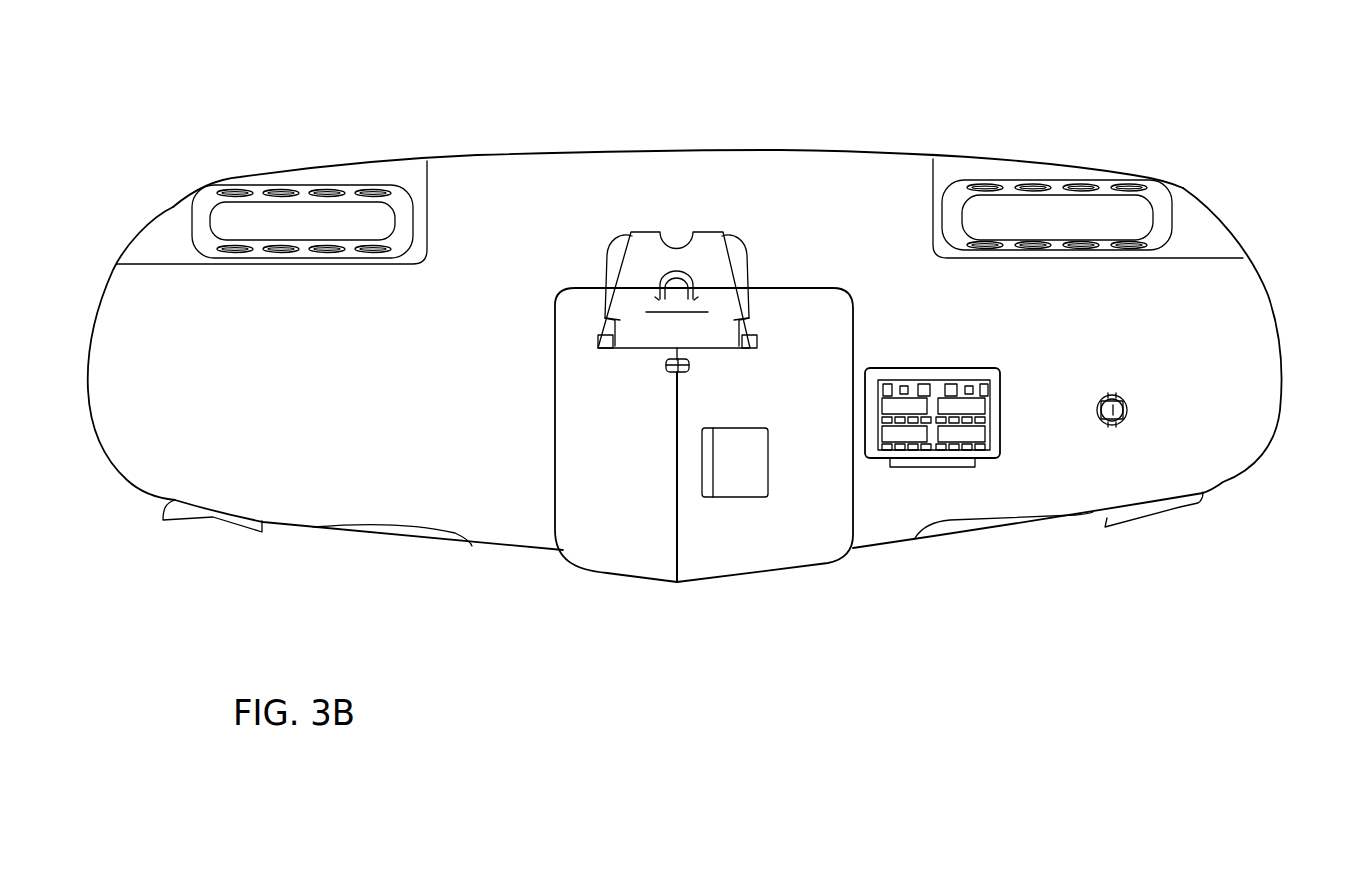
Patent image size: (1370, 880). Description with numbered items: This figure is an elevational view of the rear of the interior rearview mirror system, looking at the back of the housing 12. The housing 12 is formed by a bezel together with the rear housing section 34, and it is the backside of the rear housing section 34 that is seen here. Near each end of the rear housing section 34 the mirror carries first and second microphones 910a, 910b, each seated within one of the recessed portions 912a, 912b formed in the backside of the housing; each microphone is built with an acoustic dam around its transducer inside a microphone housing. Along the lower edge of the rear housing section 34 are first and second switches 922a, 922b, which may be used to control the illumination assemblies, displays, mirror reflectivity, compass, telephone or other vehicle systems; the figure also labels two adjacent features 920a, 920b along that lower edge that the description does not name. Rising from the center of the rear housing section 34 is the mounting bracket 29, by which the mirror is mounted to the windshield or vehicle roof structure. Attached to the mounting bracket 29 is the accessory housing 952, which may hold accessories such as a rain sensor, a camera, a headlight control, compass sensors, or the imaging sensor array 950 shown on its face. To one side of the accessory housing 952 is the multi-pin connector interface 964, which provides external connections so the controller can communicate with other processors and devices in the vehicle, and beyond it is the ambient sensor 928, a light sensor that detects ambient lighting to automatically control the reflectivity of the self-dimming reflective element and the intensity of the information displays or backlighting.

The housing 12 is at (506, 150).
The rear housing section 34 is at (630, 177).
The mounting bracket 29 is at (617, 270).
The first microphone 910a is at (1139, 182).
The second microphone 910b is at (234, 197).
The recessed portion 912a is at (1207, 233).
The recessed portion 912b is at (175, 226).
The right lower pad 920a is at (1003, 527).
The left lower pad 920b is at (428, 540).
The first switch 922a is at (1182, 508).
The second switch 922b is at (190, 512).
The ambient sensor 928 is at (1120, 430).
The imaging sensor array 950 is at (748, 483).
The accessory housing 952 is at (630, 563).
The multi-pin connector interface 964 is at (1000, 453).